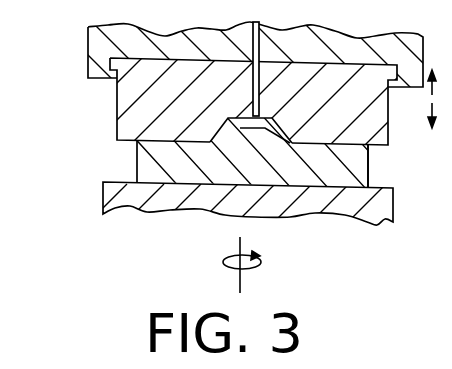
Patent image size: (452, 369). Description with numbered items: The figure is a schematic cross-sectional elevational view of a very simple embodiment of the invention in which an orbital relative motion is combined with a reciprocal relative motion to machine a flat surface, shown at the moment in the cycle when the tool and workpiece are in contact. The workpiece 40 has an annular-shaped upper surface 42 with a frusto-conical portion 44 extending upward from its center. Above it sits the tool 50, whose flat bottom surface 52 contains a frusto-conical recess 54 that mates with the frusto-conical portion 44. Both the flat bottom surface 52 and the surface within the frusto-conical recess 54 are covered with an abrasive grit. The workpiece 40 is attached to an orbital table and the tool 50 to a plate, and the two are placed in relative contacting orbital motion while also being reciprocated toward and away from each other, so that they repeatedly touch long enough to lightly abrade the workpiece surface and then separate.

The workpiece 40 is at (140, 169).
The annular-shaped upper surface 42 is at (137, 149).
The frusto-conical portion 44 is at (233, 137).
The tool 50 is at (127, 99).
The flat bottom surface 52 is at (370, 147).
The frusto-conical recess 54 is at (281, 116).